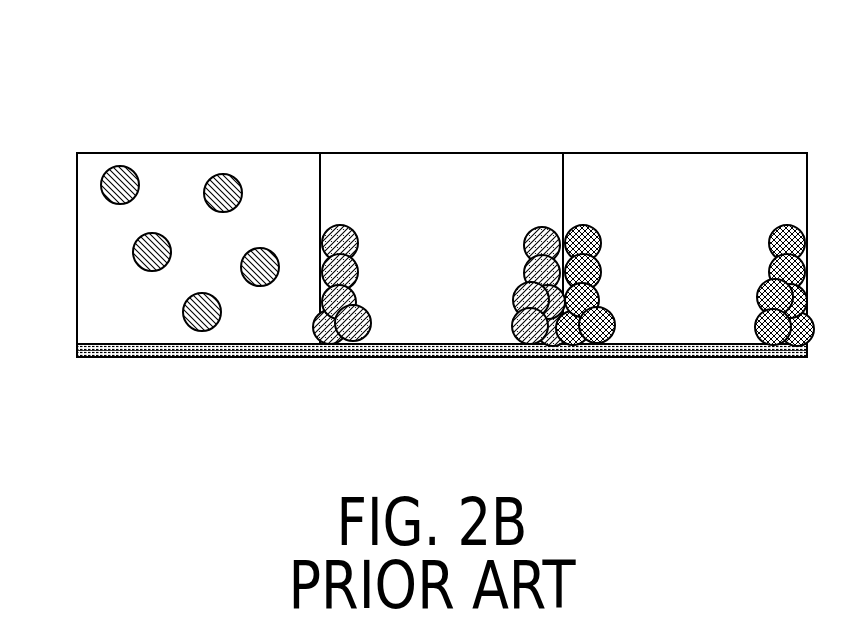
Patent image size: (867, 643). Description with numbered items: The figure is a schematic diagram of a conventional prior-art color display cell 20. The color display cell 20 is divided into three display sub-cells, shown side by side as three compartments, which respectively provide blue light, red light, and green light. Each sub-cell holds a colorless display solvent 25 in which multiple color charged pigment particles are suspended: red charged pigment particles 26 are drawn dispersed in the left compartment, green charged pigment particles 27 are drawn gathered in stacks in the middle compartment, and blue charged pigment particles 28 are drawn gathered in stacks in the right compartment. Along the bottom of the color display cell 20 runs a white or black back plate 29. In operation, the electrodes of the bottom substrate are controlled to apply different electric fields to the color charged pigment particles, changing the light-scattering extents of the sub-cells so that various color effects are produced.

The color display cell 20 is at (410, 38).
The colorless display solvent 25 is at (186, 178).
The red charged pigment particles 26 is at (105, 190).
The green charged pigment particles 27 is at (350, 230).
The blue charged pigment particles 28 is at (767, 236).
The back plate 29 is at (130, 356).